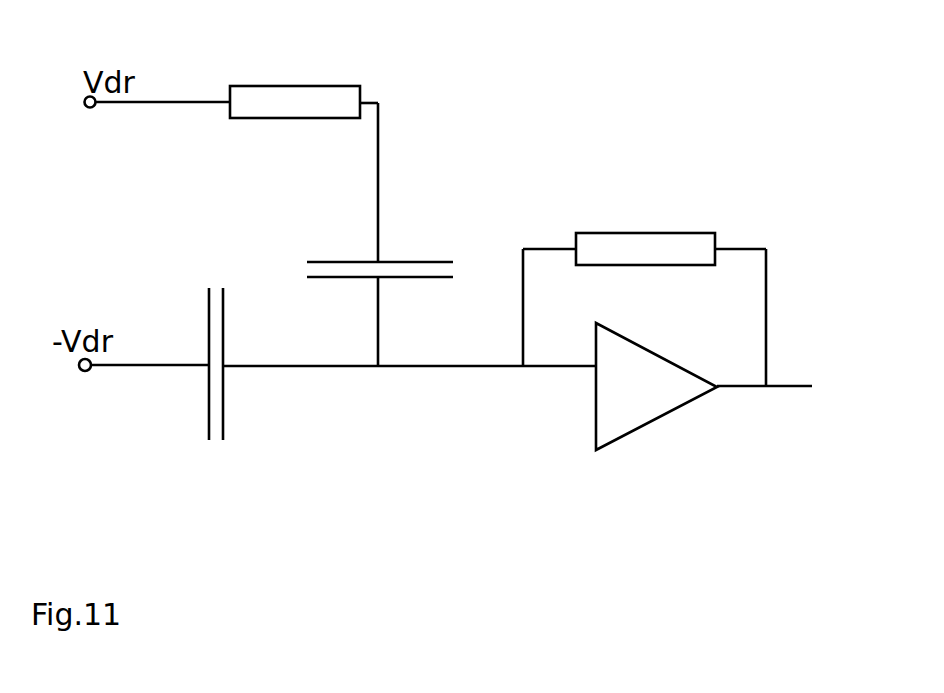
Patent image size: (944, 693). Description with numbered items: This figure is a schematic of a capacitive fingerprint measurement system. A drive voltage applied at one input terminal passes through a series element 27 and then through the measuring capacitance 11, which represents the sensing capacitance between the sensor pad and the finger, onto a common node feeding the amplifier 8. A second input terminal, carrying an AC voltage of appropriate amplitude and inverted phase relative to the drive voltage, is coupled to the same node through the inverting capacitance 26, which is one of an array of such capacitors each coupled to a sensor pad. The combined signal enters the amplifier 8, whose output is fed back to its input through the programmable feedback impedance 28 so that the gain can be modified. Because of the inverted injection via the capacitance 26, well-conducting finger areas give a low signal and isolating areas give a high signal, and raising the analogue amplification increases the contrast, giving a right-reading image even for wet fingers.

The resistor 27 is at (296, 174).
The measuring capacitance 11 is at (381, 292).
The inverting capacitor 26 is at (223, 399).
The programmable feedback impedance 28 is at (644, 273).
The amplifier 8 is at (679, 423).